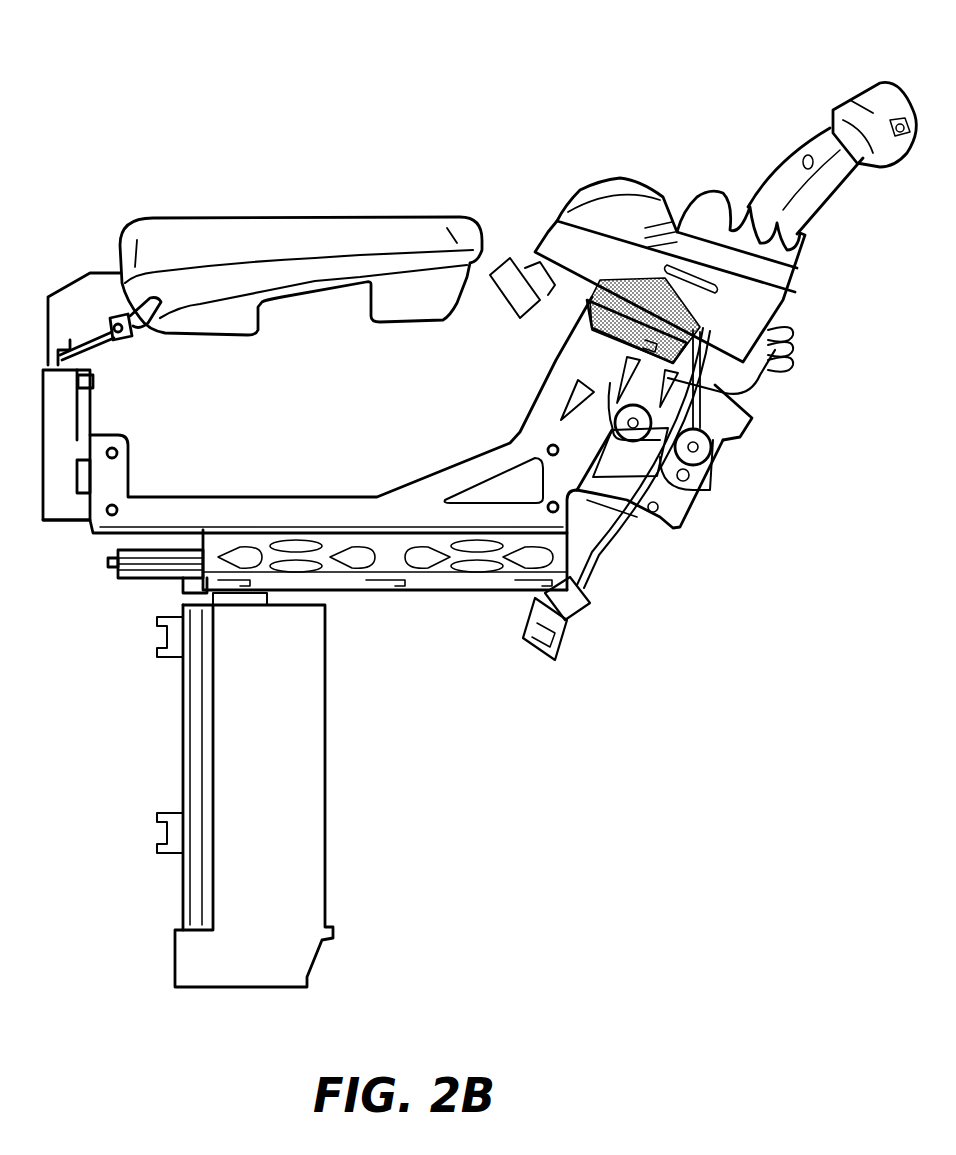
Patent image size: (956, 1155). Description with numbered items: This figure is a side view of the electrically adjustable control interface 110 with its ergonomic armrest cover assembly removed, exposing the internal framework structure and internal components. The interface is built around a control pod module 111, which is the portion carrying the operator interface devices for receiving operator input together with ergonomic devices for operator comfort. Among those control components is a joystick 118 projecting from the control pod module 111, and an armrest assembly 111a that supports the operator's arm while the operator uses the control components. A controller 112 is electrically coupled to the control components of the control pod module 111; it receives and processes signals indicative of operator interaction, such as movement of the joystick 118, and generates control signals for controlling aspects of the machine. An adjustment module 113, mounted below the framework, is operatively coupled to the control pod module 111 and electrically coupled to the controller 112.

The electrically adjustable control interface 110 is at (66, 193).
The control pod module 111 is at (763, 290).
The armrest assembly 111a is at (300, 227).
The controller 112 is at (587, 357).
The adjustment module 113 is at (293, 803).
The joystick 118 is at (868, 102).